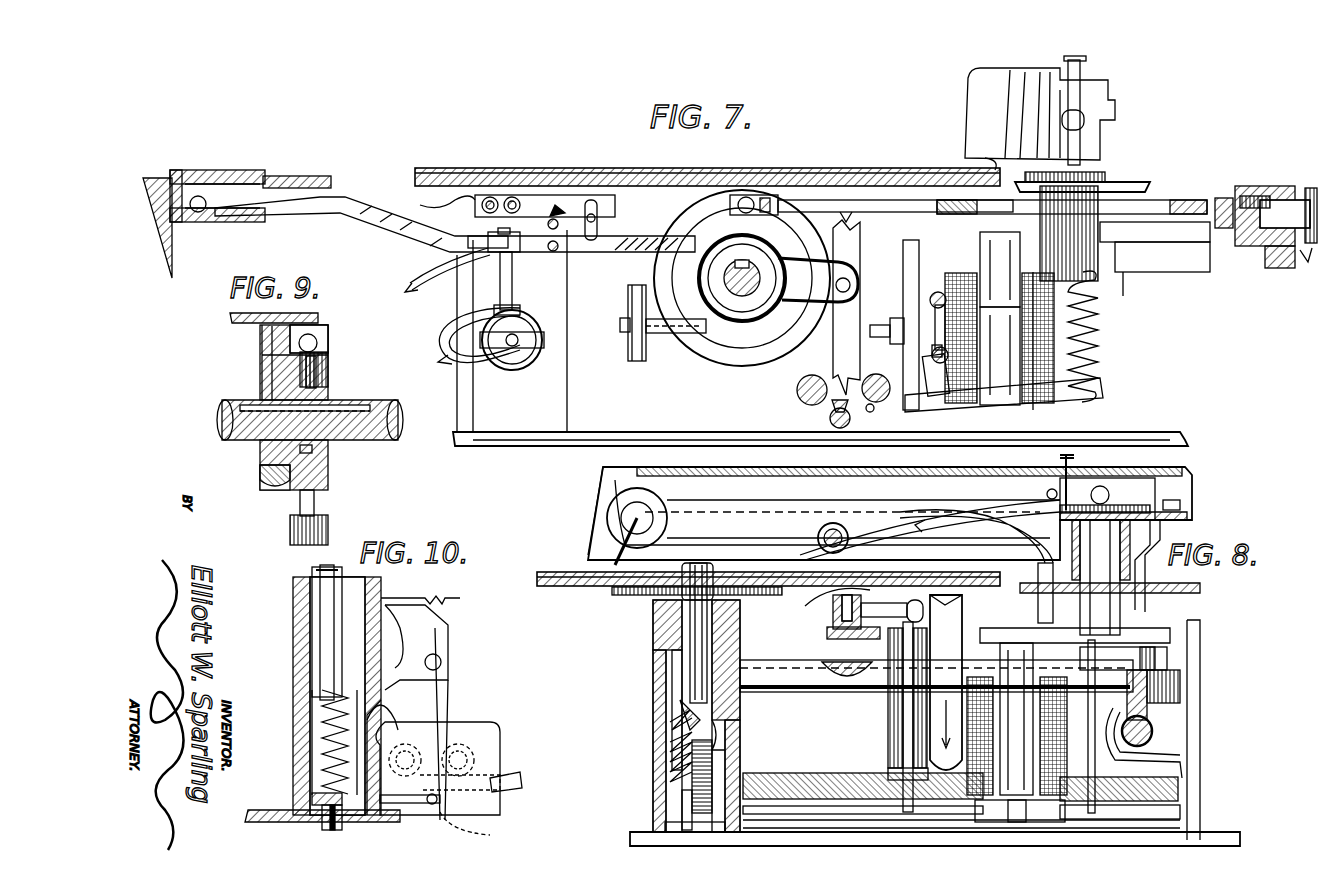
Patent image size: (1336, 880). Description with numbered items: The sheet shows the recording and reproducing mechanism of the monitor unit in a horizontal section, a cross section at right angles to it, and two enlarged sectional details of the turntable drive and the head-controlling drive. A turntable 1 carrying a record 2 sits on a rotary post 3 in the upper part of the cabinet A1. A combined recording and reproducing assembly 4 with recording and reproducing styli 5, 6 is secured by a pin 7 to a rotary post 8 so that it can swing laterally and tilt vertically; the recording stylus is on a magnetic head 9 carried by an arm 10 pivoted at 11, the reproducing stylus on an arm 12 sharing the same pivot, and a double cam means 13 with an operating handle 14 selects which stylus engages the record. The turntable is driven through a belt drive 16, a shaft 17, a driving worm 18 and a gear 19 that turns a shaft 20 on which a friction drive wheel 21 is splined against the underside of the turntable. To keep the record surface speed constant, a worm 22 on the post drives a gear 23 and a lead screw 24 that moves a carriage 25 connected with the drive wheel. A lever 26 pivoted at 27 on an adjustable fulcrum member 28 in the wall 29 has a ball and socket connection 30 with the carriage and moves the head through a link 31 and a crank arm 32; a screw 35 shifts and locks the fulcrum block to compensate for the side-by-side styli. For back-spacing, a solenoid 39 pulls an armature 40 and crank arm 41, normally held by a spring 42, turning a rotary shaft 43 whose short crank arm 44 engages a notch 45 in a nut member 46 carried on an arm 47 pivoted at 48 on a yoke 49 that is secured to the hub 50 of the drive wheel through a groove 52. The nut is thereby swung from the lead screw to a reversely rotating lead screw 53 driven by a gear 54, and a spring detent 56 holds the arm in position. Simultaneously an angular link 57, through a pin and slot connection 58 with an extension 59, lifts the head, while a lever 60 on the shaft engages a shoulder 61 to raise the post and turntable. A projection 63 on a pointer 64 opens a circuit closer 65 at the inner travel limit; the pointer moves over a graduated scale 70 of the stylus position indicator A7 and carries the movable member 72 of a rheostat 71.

In FIG. 7, the turntable 1 is at (415, 178).
In FIG. 9, the turntable 1 is at (300, 315).
In FIG. 8, the turntable 1 is at (545, 584).
In FIG. 7, the record 2 is at (958, 172).
In FIG. 8, the record 2 is at (535, 572).
In FIG. 7, the rotary post 3 is at (1150, 230).
In FIG. 10, the rotary post 3 is at (334, 612).
In FIG. 8, the rotary post 3 is at (700, 635).
In FIG. 7, the combined recording and reproducing assembly 4 is at (965, 112).
In FIG. 8, the combined recording and reproducing assembly 4 is at (920, 525).
In FIG. 7, the recording stylus 5 is at (1085, 166).
In FIG. 9, the recording stylus 5 is at (315, 345).
In FIG. 8, the recording stylus 5 is at (612, 590).
In FIG. 7, the reproducing stylus 6 is at (930, 172).
In FIG. 8, the reproducing stylus 6 is at (600, 565).
In FIG. 7, the pin 7 is at (1160, 440).
In FIG. 7, the rotary post 8 is at (1045, 232).
In FIG. 8, the rotary post 8 is at (1090, 558).
In FIG. 8, the magnetic head 9 is at (663, 535).
In FIG. 8, the arm 10 is at (735, 520).
In FIG. 8, the pivot means 11 is at (1050, 485).
In FIG. 8, the arm 12 is at (680, 485).
In FIG. 8, the double cam means 13 is at (848, 545).
In FIG. 7, the operating handle 14 is at (1100, 94).
In FIG. 7, the belt drive 16 is at (940, 292).
In FIG. 7, the shaft 17 is at (876, 350).
In FIG. 8, the shaft 17 is at (1149, 740).
In FIG. 8, the driving worm 18 is at (1150, 733).
In FIG. 8, the gear 19 is at (1180, 686).
In FIG. 7, the shaft 20 is at (736, 289).
In FIG. 9, the shaft 20 is at (380, 432).
In FIG. 8, the shaft 20 is at (870, 692).
In FIG. 7, the friction drive wheel 21 is at (668, 270).
In FIG. 9, the friction drive wheel 21 is at (260, 360).
In FIG. 8, the friction drive wheel 21 is at (958, 640).
In FIG. 10, the worm 22 is at (322, 750).
In FIG. 8, the worm 22 is at (680, 733).
In FIG. 8, the gear 23 is at (692, 805).
In FIG. 7, the lead screw 24 is at (818, 392).
In FIG. 10, the lead screw 24 is at (390, 740).
In FIG. 7, the carriage 25 is at (738, 325).
In FIG. 9, the carriage 25 is at (330, 356).
In FIG. 8, the carriage 25 is at (915, 712).
In FIG. 7, the lever 26 is at (880, 178).
In FIG. 8, the lever 26 is at (858, 613).
In FIG. 7, the pivot 27 is at (1222, 198).
In FIG. 7, the adjustable fulcrum member 28 is at (1228, 250).
In FIG. 7, the wall 29 is at (1278, 265).
In FIG. 7, the ball and socket connection 30 is at (748, 198).
In FIG. 8, the link 31 is at (868, 643).
In FIG. 7, the crank arm 32 is at (1112, 268).
In FIG. 8, the crank arm 32 is at (1170, 658).
In FIG. 7, the screw 35 is at (1312, 248).
In FIG. 7, the solenoid 39 is at (1070, 338).
In FIG. 8, the solenoid 39 is at (1085, 733).
In FIG. 7, the armature 40 is at (990, 250).
In FIG. 8, the armature 40 is at (1017, 719).
In FIG. 7, the crank arm 41 is at (1055, 397).
In FIG. 10, the crank arm 41 is at (505, 790).
In FIG. 8, the crank arm 41 is at (1020, 825).
In FIG. 7, the spring 42 is at (1100, 362).
In FIG. 10, the rotary shaft 43 is at (490, 836).
In FIG. 8, the rotary shaft 43 is at (1180, 820).
In FIG. 7, the short crank arm 44 is at (880, 420).
In FIG. 10, the short crank arm 44 is at (500, 770).
In FIG. 7, the notch 45 is at (820, 366).
In FIG. 7, the nut member 46 is at (828, 416).
In FIG. 9, the nut member 46 is at (330, 525).
In FIG. 10, the nut member 46 is at (460, 732).
In FIG. 8, the nut member 46 is at (888, 772).
In FIG. 7, the arm 47 is at (880, 310).
In FIG. 9, the arm 47 is at (316, 500).
In FIG. 10, the arm 47 is at (445, 706).
In FIG. 8, the arm 47 is at (905, 752).
In FIG. 7, the pivot 48 is at (852, 284).
In FIG. 10, the pivot 48 is at (442, 664).
In FIG. 8, the pivot 48 is at (890, 670).
In FIG. 7, the yoke 49 is at (765, 357).
In FIG. 9, the yoke 49 is at (328, 362).
In FIG. 10, the yoke 49 is at (405, 636).
In FIG. 9, the hub 50 is at (316, 385).
In FIG. 9, the groove 52 is at (330, 388).
In FIG. 7, the lead screw 53 is at (894, 380).
In FIG. 10, the lead screw 53 is at (480, 754).
In FIG. 8, the gear 54 is at (720, 775).
In FIG. 7, the spring detent 56 is at (852, 218).
In FIG. 10, the spring detent 56 is at (418, 598).
In FIG. 8, the angular link 57 is at (1162, 532).
In FIG. 8, the pin and slot connection 58 is at (1180, 498).
In FIG. 8, the extension 59 is at (1190, 514).
In FIG. 10, the lever 60 is at (385, 806).
In FIG. 8, the lever 60 is at (665, 825).
In FIG. 10, the shoulder 61 is at (305, 822).
In FIG. 7, the projection 63 is at (615, 212).
In FIG. 7, the pointer 64 is at (320, 212).
In FIG. 7, the circuit closer 65 is at (558, 205).
In FIG. 7, the graduated scale 70 is at (202, 210).
In FIG. 7, the rheostat 71 is at (520, 380).
In FIG. 7, the movable member 72 is at (512, 283).
In FIG. 7, the cabinet A1 is at (1270, 185).
In FIG. 7, the stylus position indicator A7 is at (246, 163).